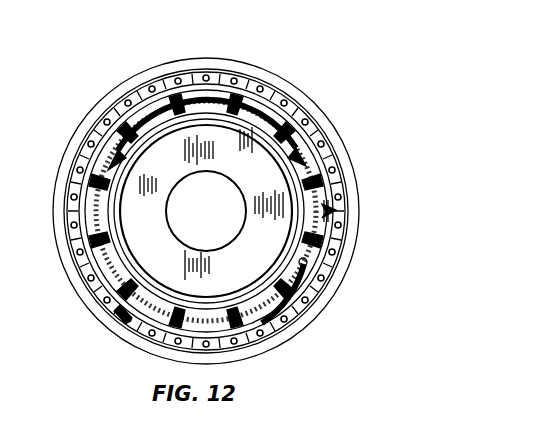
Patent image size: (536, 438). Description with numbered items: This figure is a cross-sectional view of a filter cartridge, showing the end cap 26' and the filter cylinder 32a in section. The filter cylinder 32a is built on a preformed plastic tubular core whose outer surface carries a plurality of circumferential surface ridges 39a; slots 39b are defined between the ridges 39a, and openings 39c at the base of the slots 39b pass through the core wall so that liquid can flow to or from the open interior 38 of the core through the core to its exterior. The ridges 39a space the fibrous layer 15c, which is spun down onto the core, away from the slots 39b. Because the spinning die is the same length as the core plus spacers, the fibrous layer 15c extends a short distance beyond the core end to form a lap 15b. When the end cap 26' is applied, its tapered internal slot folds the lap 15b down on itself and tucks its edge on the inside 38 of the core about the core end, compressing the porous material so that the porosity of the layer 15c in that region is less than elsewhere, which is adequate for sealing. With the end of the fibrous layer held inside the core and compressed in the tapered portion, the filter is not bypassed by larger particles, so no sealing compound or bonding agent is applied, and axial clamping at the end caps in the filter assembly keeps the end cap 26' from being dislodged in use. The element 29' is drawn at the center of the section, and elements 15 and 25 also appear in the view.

The shaft bore 29' is at (206, 211).
The lap 15b is at (266, 119).
The fibrous layer 15c is at (285, 100).
The bearing housing 15 is at (338, 151).
The slots 39b is at (333, 176).
The openings 39c is at (210, 95).
The circumferential surface ridges 39a is at (338, 210).
The open interior 38 is at (305, 263).
The inner housing ring 25 is at (328, 124).
The end cap 26' is at (212, 211).
The filter cylinder 32a is at (128, 320).